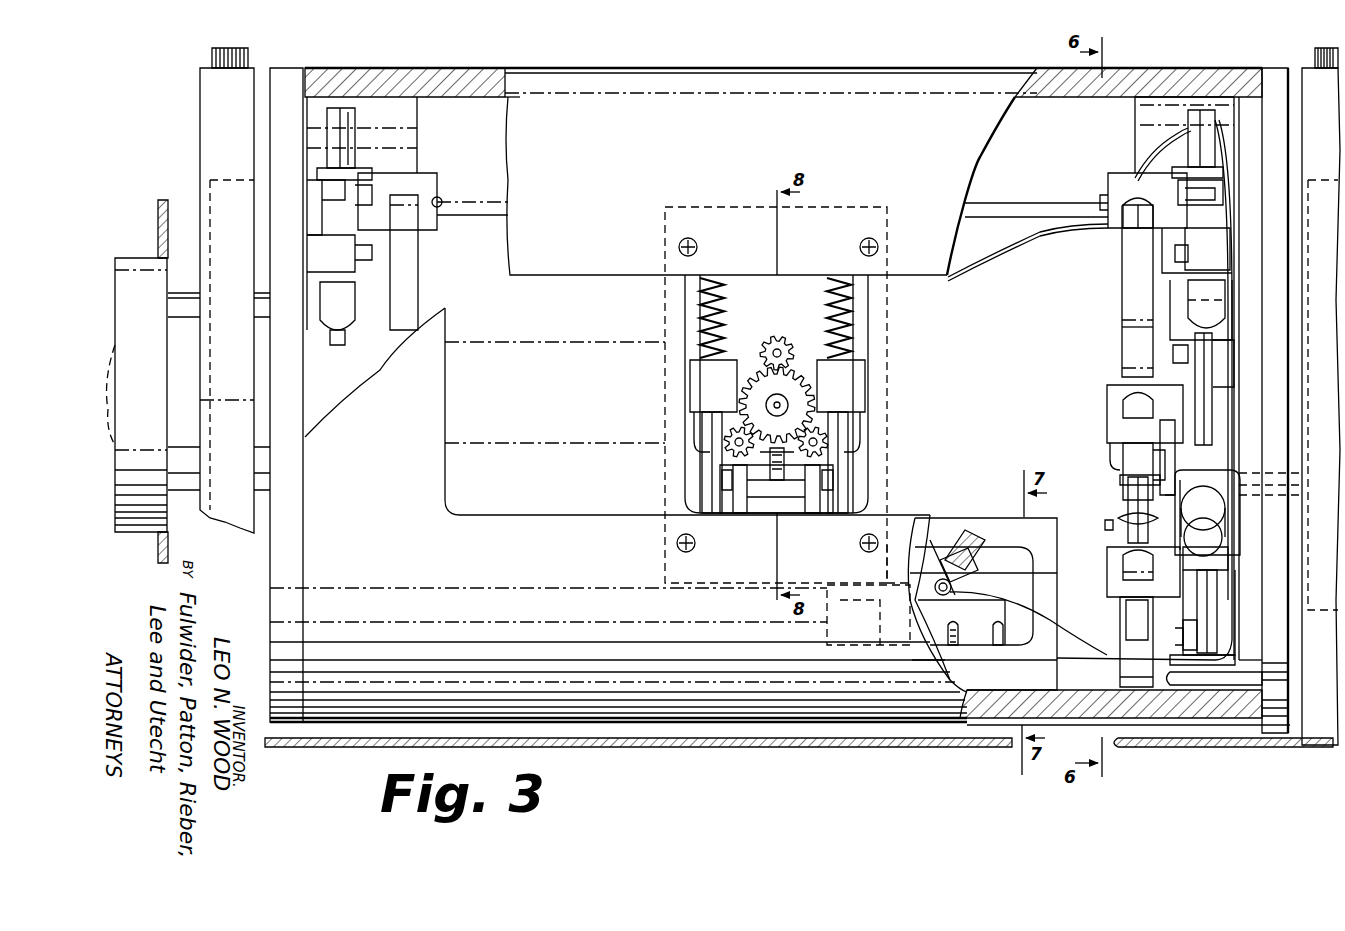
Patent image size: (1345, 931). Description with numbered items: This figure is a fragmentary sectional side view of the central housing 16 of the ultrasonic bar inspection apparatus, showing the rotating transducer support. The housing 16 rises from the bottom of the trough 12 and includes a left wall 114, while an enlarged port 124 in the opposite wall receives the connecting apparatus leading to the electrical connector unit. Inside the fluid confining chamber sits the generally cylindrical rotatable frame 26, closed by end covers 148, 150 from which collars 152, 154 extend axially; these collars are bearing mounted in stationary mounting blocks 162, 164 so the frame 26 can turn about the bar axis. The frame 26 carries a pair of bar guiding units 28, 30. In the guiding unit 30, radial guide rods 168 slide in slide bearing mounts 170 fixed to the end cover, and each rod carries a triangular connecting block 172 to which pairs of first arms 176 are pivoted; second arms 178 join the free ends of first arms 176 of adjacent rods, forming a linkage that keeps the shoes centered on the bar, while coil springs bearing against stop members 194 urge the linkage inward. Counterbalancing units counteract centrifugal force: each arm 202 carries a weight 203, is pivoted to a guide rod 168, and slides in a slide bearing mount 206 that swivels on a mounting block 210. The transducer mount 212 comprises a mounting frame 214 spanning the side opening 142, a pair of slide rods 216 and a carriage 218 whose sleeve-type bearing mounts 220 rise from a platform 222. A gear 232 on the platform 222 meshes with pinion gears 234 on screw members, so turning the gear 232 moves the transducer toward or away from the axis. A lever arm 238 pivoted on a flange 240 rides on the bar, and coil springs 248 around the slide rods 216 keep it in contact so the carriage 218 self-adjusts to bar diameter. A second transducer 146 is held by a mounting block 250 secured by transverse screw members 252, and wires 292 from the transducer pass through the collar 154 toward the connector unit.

The trough 12 is at (1190, 747).
The housing 16 is at (174, 202).
The rotatable frame 26 is at (478, 72).
The bar guiding unit 28 is at (423, 174).
The bar guiding unit 30 is at (1104, 178).
The left wall 114 is at (160, 213).
The port 124 is at (145, 515).
The side opening 142 is at (630, 260).
The second transducer 146 is at (1005, 512).
The end cover 148 is at (298, 70).
The end cover 150 is at (1278, 72).
The collar 152 is at (290, 423).
The collar 154 is at (1255, 353).
The stationary mounting block 162 is at (212, 92).
The stationary mounting block 164 is at (1334, 94).
The radial guide rod 168 is at (1218, 133).
The slide bearing mount 170 is at (1225, 478).
The triangular connecting block 172 is at (1150, 462).
The first arm 176 is at (1200, 400).
The second arm 178 is at (1215, 302).
The stop member 194 is at (1220, 250).
The arm 202 is at (1130, 516).
The weight 203 is at (1128, 256).
The slide bearing mount 206 is at (1120, 186).
The mounting block 210 is at (1210, 563).
The transducer mount 212 is at (781, 300).
The mounting frame 214 is at (662, 315).
The slide rod 216 is at (727, 305).
The carriage 218 is at (765, 340).
The sleeve-type bearing mount 220 is at (698, 378).
The platform 222 is at (700, 442).
The gear 232 is at (795, 385).
The pinion gear 234 is at (779, 350).
The lever arm 238 is at (773, 502).
The flange 240 is at (740, 508).
The coil spring 248 is at (708, 280).
The mounting block 250 is at (972, 585).
The transverse screw member 252 is at (958, 640).
The wires 292 is at (984, 280).